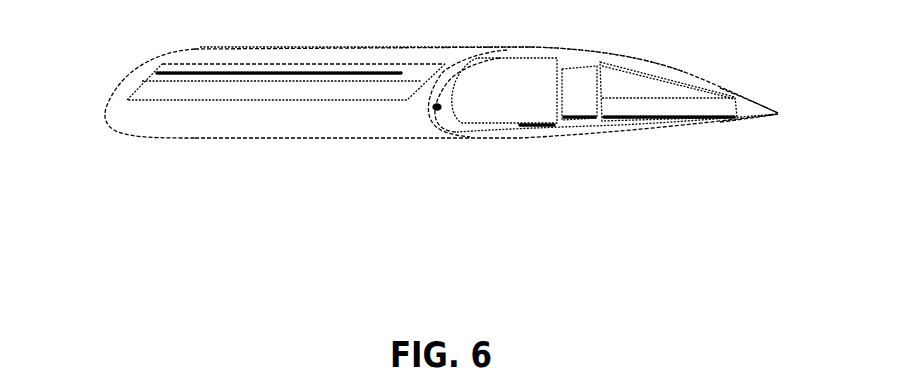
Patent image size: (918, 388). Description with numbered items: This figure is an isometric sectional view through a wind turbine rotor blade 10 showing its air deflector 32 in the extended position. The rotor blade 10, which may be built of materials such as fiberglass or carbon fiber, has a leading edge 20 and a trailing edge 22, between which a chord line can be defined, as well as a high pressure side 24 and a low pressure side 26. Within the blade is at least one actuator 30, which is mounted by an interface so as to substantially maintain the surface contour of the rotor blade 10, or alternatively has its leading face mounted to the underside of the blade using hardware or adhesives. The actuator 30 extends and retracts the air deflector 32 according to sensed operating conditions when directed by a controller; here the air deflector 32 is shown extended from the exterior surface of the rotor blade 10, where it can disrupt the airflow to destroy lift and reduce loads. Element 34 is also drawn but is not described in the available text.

The rotor blade 10 is at (624, 40).
The leading edge 20 is at (103, 113).
The trailing edge 22 is at (780, 113).
The high pressure side 24 is at (543, 133).
The low pressure side 26 is at (468, 47).
The actuator 30 is at (440, 110).
The air deflector 32 is at (367, 72).
The internal panel 34 is at (163, 65).